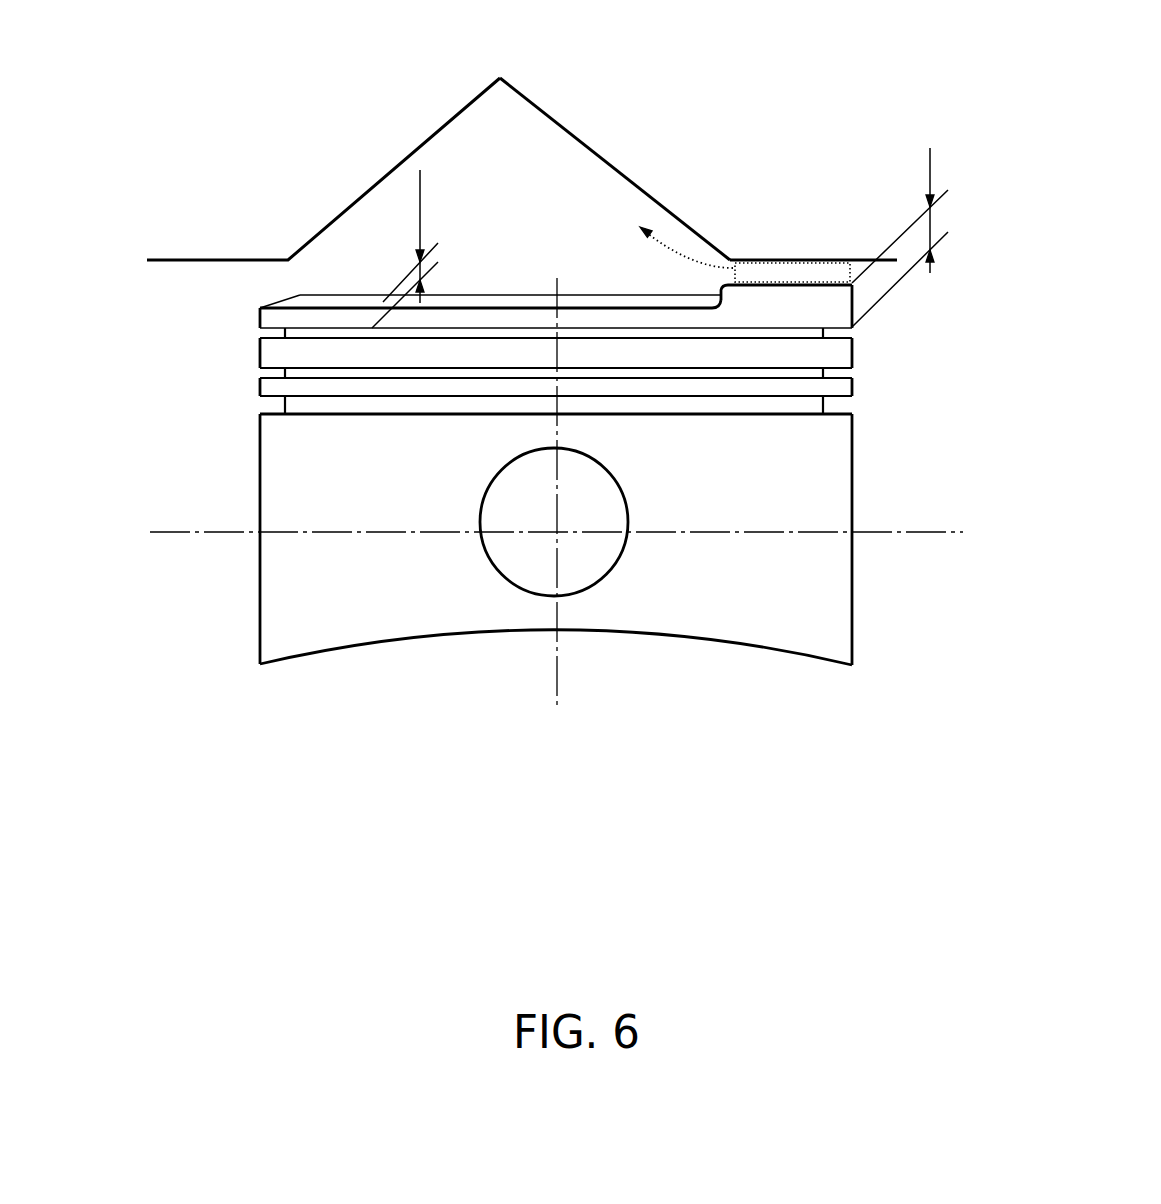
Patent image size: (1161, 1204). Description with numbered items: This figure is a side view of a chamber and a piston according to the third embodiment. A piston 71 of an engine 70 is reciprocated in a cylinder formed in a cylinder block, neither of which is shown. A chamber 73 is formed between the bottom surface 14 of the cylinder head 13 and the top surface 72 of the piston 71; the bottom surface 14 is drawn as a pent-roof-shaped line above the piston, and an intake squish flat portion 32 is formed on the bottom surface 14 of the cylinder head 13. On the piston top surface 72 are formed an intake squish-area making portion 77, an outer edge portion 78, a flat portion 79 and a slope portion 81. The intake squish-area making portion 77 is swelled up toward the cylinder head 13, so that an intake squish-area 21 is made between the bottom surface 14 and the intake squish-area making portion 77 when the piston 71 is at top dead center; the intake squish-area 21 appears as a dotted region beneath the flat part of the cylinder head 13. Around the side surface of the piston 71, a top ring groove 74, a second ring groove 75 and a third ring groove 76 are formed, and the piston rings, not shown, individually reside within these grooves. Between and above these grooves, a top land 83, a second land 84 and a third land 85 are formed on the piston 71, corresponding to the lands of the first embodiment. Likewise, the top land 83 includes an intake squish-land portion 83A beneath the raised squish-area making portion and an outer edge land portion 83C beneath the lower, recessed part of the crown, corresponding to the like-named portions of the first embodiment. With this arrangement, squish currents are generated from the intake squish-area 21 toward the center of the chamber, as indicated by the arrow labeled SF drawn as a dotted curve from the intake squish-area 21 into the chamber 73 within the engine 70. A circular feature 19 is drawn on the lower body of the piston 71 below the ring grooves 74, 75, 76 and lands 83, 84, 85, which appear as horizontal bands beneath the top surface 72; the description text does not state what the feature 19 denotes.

The cylinder head 13 is at (522, 143).
The chamber 73 is at (577, 162).
The bottom surface 14 is at (514, 146).
The squish currents SF is at (670, 235).
The engine 70 is at (508, 523).
The top surface 72 is at (490, 261).
The outer edge portion 78 is at (458, 307).
The flat portion 79 is at (502, 292).
The slope portion 81 is at (292, 296).
The outer edge land portion 83C is at (600, 317).
The intake squish-land portion 83A is at (750, 298).
The intake squish-area 21 is at (788, 226).
The intake squish flat portion 32 is at (832, 270).
The intake squish-area making portion 77 is at (792, 287).
The top land 83 is at (252, 313).
The top ring groove 74 is at (267, 333).
The second land 84 is at (252, 352).
The second ring groove 75 is at (267, 373).
The third land 85 is at (252, 392).
The third ring groove 76 is at (267, 405).
The piston 71 is at (255, 675).
The piston pin hole 19 is at (503, 580).